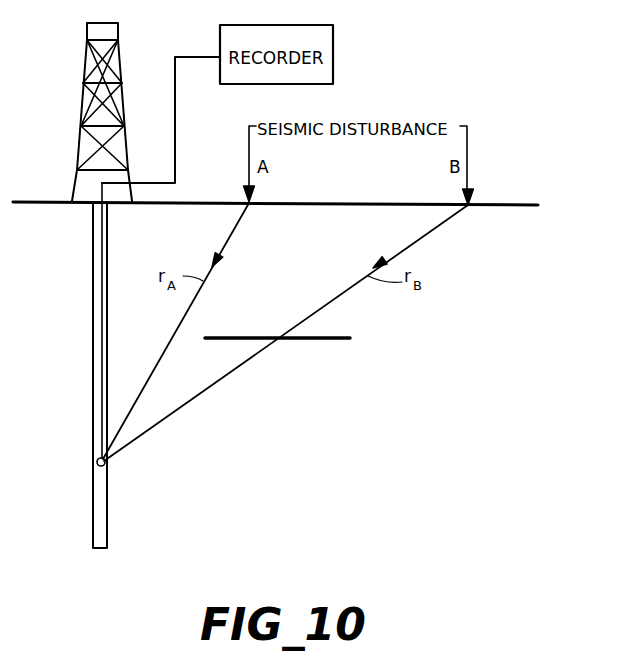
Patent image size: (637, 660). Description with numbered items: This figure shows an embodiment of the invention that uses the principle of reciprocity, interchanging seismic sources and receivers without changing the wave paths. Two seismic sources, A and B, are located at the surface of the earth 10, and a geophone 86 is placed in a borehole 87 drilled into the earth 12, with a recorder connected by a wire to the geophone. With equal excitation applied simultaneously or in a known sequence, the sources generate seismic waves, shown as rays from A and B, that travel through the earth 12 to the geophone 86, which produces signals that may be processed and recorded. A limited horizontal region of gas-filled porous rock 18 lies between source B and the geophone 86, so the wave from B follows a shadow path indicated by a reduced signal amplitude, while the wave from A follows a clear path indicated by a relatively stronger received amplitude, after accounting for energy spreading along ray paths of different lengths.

The surface of the earth 10 is at (518, 203).
The earth 12 is at (486, 344).
The gas-filled porous rock 18 is at (328, 340).
The geophone 86 is at (108, 463).
The borehole 87 is at (104, 531).